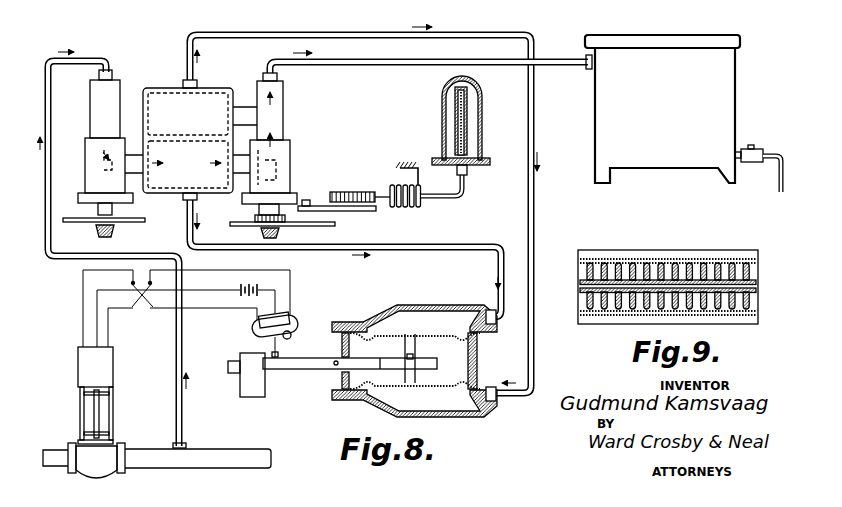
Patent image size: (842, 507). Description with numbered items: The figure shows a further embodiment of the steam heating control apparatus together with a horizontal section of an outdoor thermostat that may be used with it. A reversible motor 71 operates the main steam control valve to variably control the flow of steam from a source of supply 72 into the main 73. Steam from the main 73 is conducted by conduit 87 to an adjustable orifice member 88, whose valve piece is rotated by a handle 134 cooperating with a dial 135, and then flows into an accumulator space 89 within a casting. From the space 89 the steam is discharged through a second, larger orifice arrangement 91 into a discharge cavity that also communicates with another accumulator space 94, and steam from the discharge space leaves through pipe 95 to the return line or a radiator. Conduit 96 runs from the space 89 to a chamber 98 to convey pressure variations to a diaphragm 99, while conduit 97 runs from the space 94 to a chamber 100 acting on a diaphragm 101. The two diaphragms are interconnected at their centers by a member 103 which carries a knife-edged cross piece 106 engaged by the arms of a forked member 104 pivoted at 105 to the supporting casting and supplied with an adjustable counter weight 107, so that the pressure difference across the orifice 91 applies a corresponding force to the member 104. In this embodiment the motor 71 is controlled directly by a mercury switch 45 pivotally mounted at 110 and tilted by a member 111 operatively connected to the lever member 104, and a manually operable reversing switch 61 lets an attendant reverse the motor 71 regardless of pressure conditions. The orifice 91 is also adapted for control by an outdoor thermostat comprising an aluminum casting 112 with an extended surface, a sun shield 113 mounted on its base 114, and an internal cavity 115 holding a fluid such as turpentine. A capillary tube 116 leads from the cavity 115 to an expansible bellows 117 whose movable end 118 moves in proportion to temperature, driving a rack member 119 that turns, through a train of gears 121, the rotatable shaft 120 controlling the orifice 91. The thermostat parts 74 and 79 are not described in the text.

In FIG. 8, the mercury switch 45 is at (292, 324).
In FIG. 8, the manually operable reversing switch 61 is at (139, 314).
In FIG. 8, the reversible motor 71 is at (108, 367).
In FIG. 8, the source of supply 72 is at (49, 448).
In FIG. 8, the main 73 is at (228, 455).
In FIG. 8, the tank 74 is at (656, 162).
In FIG. 8, the faucet 79 is at (760, 150).
In FIG. 8, the conduit 87 is at (106, 58).
In FIG. 8, the orifice member 88 is at (105, 165).
In FIG. 8, the accumulator space 89 is at (188, 164).
In FIG. 8, the orifice arrangement 91 is at (283, 170).
In FIG. 8, the accumulator space 94 is at (222, 112).
In FIG. 8, the pipe 95 is at (266, 65).
In FIG. 8, the conduit 96 is at (445, 250).
In FIG. 8, the conduit 97 is at (285, 33).
In FIG. 8, the chamber 98 is at (423, 308).
In FIG. 8, the diaphragm 99 is at (386, 332).
In FIG. 8, the chamber 100 is at (440, 394).
In FIG. 8, the diaphragm 101 is at (386, 386).
In FIG. 8, the member 103 is at (416, 345).
In FIG. 8, the forked member 104 is at (364, 366).
In FIG. 8, the pivot 105 is at (334, 372).
In FIG. 8, the knife-edged cross piece 106 is at (420, 360).
In FIG. 8, the adjustable counter weight 107 is at (261, 387).
In FIG. 8, the pivotal mounting 110 is at (287, 336).
In FIG. 8, the member 111 is at (270, 339).
In FIG. 8, the aluminum casting 112 is at (467, 143).
In FIG. 9, the aluminum casting 112 is at (608, 267).
In FIG. 8, the sun shield 113 is at (483, 108).
In FIG. 9, the sun shield 113 is at (718, 253).
In FIG. 8, the base 114 is at (482, 162).
In FIG. 8, the internal cavity 115 is at (470, 93).
In FIG. 9, the internal cavity 115 is at (663, 270).
In FIG. 8, the capillary tube 116 is at (458, 198).
In FIG. 8, the expansible bellows 117 is at (406, 208).
In FIG. 8, the movable end 118 is at (396, 184).
In FIG. 8, the rack member 119 is at (360, 191).
In FIG. 8, the rotatable shaft 120 is at (281, 230).
In FIG. 8, the train of gears 121 is at (358, 210).
In FIG. 8, the handle 134 is at (118, 234).
In FIG. 8, the dial 135 is at (122, 220).